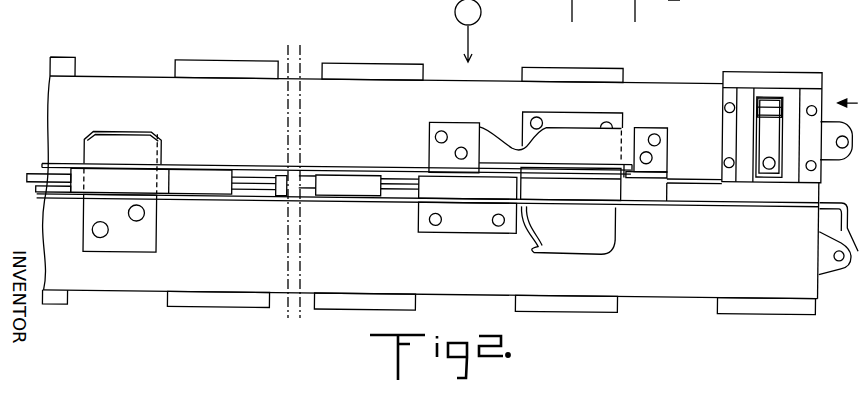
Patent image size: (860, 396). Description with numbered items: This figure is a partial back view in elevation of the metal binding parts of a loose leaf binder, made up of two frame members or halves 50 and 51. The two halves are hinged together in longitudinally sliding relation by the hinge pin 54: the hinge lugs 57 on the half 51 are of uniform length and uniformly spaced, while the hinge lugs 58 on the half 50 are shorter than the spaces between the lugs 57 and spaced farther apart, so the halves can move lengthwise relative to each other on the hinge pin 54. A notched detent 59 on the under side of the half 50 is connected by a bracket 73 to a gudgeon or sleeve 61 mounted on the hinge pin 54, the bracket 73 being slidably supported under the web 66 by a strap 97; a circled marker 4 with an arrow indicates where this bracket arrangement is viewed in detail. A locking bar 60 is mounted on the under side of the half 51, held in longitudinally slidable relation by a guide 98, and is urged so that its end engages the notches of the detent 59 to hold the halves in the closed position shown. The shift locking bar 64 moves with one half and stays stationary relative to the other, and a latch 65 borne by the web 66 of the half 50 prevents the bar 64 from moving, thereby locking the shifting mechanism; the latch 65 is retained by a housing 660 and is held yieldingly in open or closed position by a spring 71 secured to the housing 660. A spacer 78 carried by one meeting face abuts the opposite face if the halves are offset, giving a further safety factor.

The section line indicator for FIG. 4 is at (468, 31).
The frame half 50 is at (653, 86).
The frame half 51 is at (748, 259).
The hinge pin 54 is at (38, 175).
The hinge lugs 57 is at (132, 179).
The hinge lugs 58 is at (207, 178).
The detent 59 is at (605, 222).
The locking bar 60 is at (55, 186).
The gudgeon or sleeve 61 is at (573, 185).
The shift locking bar 64 is at (43, 163).
The latch 65 is at (780, 91).
The web 66 is at (710, 107).
The housing 660 is at (748, 94).
The spring 71 is at (772, 124).
The bracket 73 is at (543, 112).
The spacer 78 is at (135, 144).
The strap 97 is at (632, 121).
The guide 98 is at (457, 206).